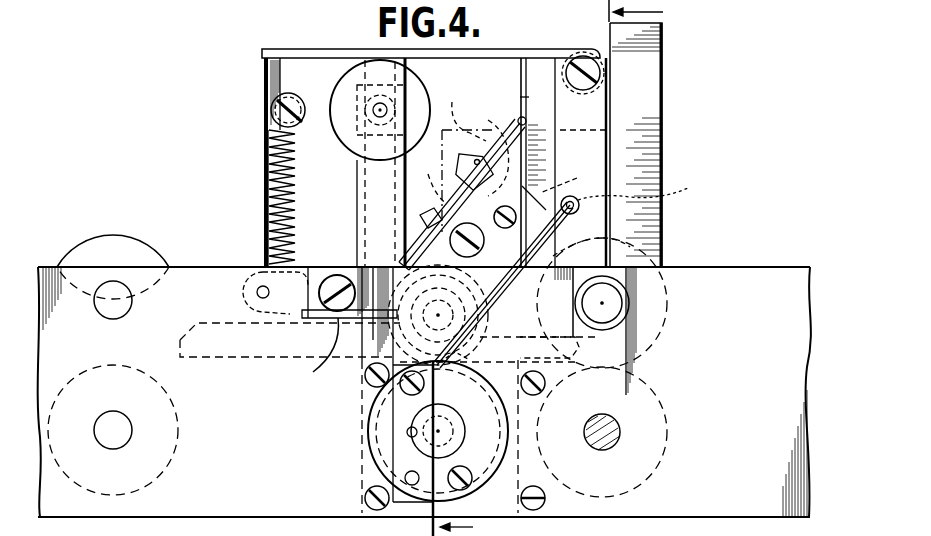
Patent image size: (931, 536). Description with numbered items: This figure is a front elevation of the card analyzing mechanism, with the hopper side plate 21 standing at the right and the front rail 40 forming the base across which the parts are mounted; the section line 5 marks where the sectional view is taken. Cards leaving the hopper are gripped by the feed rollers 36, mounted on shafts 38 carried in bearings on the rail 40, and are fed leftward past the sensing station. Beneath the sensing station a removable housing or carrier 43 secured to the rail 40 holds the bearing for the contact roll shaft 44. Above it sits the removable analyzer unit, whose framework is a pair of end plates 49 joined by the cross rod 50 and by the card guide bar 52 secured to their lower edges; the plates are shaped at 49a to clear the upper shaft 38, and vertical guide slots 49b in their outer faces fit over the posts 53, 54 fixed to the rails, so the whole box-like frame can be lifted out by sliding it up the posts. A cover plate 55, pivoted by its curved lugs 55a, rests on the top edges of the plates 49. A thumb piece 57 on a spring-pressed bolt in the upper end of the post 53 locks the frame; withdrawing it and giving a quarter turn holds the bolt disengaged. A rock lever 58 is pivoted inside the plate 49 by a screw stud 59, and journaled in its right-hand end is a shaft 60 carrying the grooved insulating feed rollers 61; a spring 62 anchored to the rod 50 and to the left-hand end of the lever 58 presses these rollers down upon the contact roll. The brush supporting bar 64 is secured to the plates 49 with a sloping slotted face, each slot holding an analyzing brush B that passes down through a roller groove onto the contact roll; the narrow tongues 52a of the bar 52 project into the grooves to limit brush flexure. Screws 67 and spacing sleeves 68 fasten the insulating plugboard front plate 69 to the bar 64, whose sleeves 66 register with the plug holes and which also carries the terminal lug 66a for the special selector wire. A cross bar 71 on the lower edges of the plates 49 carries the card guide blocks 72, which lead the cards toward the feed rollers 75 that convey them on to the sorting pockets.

The section line 5- 5 is at (540, 268).
The side plate 21 is at (637, 77).
The feed rollers 36 is at (663, 322).
The shafts 38 is at (603, 308).
The front rail 40 is at (202, 266).
The removable housings or carriers 43 is at (487, 467).
The contact roll shaft 44 is at (447, 431).
The end plates 49 is at (303, 158).
The shaped portion of end plates 49a is at (592, 266).
The vertical guide slots 49b is at (527, 97).
The cross rod 50 is at (272, 110).
The card guide bar 52 is at (520, 397).
The tongues 52a is at (461, 366).
The post 53 is at (378, 227).
The post 54 is at (537, 153).
The cover plate 55 is at (325, 50).
The lugs 55a is at (587, 98).
The thumb piece 57 is at (350, 80).
The rock lever 58 is at (272, 308).
The screw stud 59 is at (333, 267).
The shaft 60 is at (425, 318).
The feed rollers 61 is at (410, 360).
The spring 62 is at (267, 183).
The brush supporting bar 64 is at (518, 266).
The sleeves 66 is at (470, 183).
The terminal lug 66a is at (654, 187).
The screws 67 is at (432, 214).
The spacing sleeves 68 is at (486, 149).
The plugboard front plate 69 is at (448, 141).
The cross bar 71 is at (312, 351).
The card guide block 72 is at (197, 357).
The feed rollers 75 is at (117, 247).
The analyzing brush B is at (505, 327).